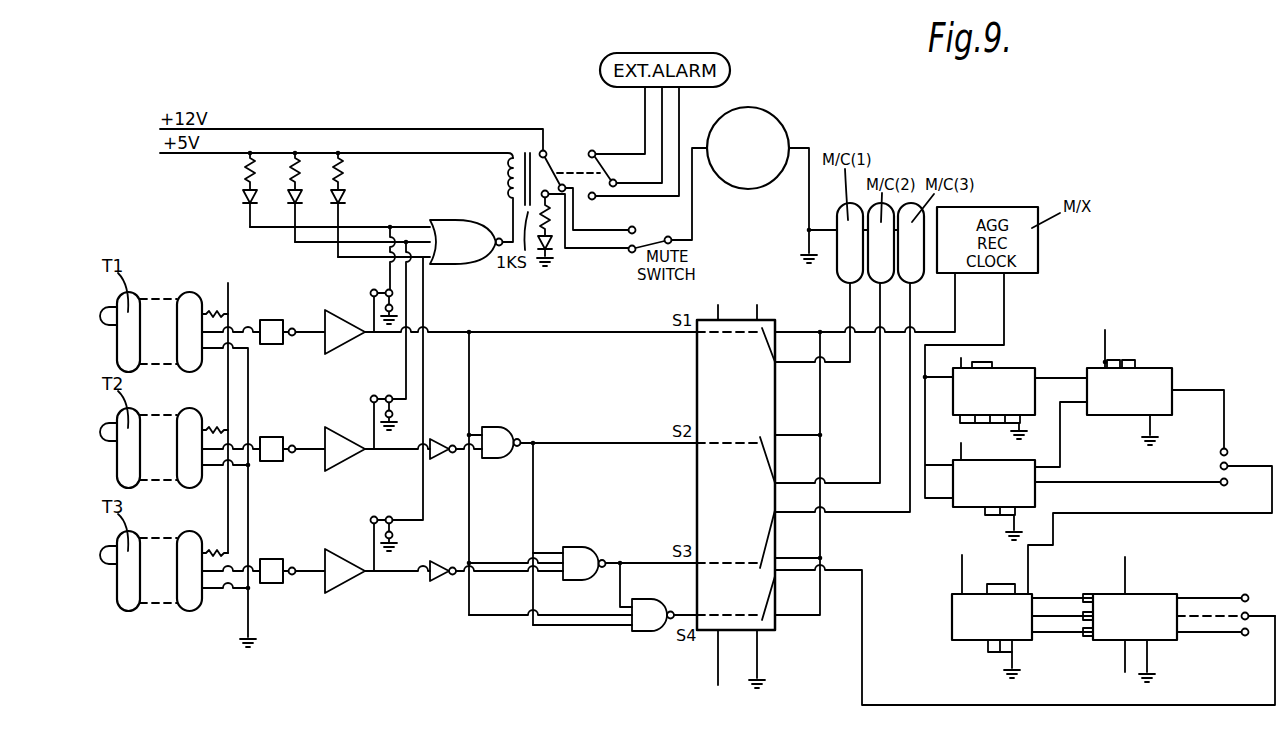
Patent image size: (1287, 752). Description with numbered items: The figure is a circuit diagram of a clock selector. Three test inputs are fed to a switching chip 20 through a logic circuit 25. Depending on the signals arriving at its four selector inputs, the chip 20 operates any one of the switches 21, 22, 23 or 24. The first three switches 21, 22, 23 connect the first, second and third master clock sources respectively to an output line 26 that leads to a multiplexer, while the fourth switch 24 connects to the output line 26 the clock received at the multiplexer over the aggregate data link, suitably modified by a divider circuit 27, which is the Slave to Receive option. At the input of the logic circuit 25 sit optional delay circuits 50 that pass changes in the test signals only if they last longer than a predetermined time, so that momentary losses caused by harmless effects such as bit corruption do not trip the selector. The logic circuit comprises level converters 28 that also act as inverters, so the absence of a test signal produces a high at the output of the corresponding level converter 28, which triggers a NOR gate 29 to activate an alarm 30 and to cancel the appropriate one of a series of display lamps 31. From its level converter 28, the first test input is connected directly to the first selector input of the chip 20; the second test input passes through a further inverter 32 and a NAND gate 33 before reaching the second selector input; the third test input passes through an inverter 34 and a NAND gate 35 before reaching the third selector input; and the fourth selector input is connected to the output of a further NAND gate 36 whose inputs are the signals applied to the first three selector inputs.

The switching chip 20 is at (705, 378).
The switch 21 is at (759, 345).
The switch 22 is at (759, 460).
The switch 23 is at (759, 539).
The switch 24 is at (759, 598).
The logic circuit 25 is at (381, 626).
The output line 26 is at (822, 524).
The divider circuit 27 is at (1150, 336).
The level converter 28 is at (345, 324).
The NOR gate 29 is at (452, 264).
The alarm 30 is at (757, 125).
The display lamp 31 is at (243, 196).
The inverter 32 is at (437, 438).
The NAND gate 33 is at (505, 438).
The inverter 34 is at (434, 577).
The NAND gate 35 is at (580, 552).
The NAND gate 36 is at (647, 624).
The delay circuit 50 is at (272, 320).